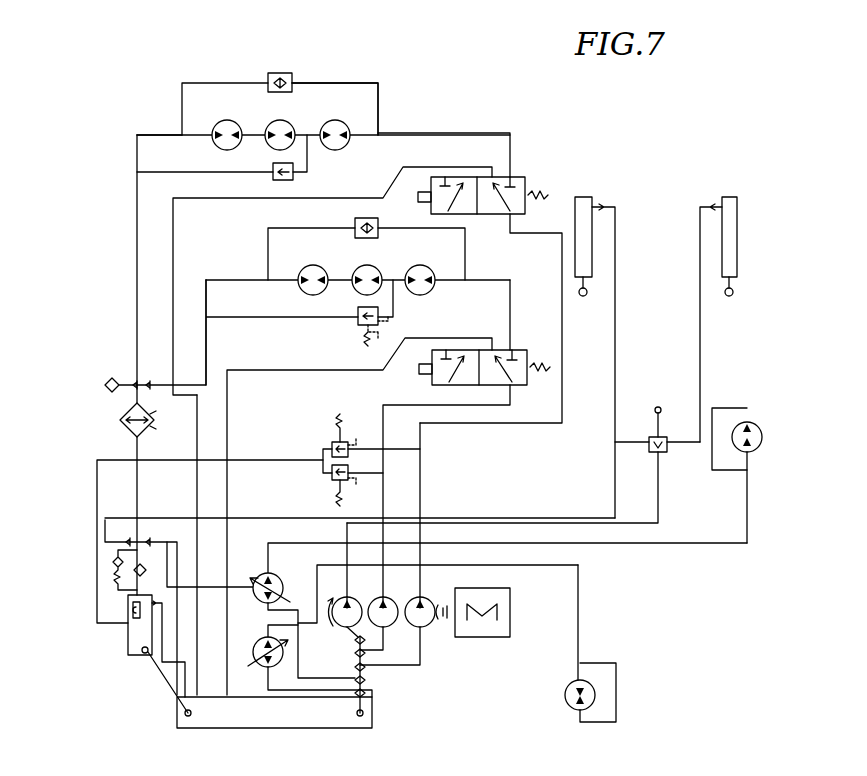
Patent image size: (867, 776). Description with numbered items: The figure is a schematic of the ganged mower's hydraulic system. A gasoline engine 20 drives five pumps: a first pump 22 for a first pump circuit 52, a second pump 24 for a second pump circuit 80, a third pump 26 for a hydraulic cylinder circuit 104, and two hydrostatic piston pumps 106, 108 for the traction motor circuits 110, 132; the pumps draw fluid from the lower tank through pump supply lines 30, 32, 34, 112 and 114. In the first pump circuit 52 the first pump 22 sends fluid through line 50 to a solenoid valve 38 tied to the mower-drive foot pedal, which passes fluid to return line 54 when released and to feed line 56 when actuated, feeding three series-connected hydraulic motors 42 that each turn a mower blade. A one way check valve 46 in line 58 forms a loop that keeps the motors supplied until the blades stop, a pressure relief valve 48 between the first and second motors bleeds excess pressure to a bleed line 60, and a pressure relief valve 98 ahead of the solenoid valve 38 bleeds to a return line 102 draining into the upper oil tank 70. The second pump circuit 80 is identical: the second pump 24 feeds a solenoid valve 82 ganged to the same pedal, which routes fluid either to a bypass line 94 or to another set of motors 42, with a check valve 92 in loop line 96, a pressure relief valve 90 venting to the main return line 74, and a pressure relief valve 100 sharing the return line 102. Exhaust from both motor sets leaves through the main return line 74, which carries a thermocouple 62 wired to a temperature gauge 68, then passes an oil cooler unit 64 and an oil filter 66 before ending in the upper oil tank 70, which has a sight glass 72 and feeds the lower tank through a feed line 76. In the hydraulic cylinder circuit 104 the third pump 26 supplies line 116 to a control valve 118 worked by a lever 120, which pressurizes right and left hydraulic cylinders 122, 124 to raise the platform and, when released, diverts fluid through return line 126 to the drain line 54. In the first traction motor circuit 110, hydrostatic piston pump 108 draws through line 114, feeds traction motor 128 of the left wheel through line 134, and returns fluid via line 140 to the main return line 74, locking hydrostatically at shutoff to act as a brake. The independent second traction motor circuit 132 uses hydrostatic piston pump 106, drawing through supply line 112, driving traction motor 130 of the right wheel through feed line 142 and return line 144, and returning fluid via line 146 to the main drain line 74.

The gasoline engine 20 is at (510, 612).
The first pump 22 is at (425, 630).
The second pump 24 is at (395, 597).
The third pump 26 is at (365, 588).
The pump supply line 30 is at (423, 660).
The pump supply line 32 is at (405, 638).
The pump supply line 34 is at (347, 628).
The solenoid valve 38 is at (527, 177).
The hydraulic motors 42 is at (222, 121).
The one way check valve 46 is at (280, 73).
The pressure relief valve 48 is at (293, 178).
The line 50 is at (423, 478).
The first pump circuit 52 is at (399, 82).
The return line 54 is at (193, 198).
The feed line 56 is at (470, 133).
The loop line 58 is at (372, 83).
The bleed line 60 is at (232, 172).
The thermocouple 62 is at (112, 378).
The oil cooler unit 64 is at (121, 420).
The oil filter 66 is at (113, 565).
The temperature gauge 68 is at (135, 583).
The upper oil tank 70 is at (128, 620).
The sight glass 72 is at (128, 610).
The main fluid return line 74 is at (160, 133).
The feed line 76 is at (162, 670).
The second pump circuit 80 is at (408, 283).
The solenoid valve 82 is at (522, 350).
The pressure relief valve 90 is at (360, 327).
The one way check valve 92 is at (376, 238).
The fluid bypass line 94 is at (233, 410).
The loop line 96 is at (268, 262).
The pressure relief valve 98 is at (341, 412).
The pressure relief valve 100 is at (328, 478).
The return line 102 is at (298, 460).
The hydraulic cylinder circuit 104 is at (688, 152).
The hydrostatic piston pump 106 is at (290, 570).
The hydrostatic piston pump 108 is at (263, 668).
The first traction motor circuit 110 is at (603, 620).
The supply line 112 is at (307, 678).
The supply line 114 is at (330, 700).
The line 116 is at (660, 502).
The control valve 118 is at (662, 455).
The lever 120 is at (658, 406).
The right hydraulic cylinder 122 is at (731, 197).
The left hydraulic cylinder 124 is at (585, 197).
The return line 126 is at (615, 482).
The traction motor 128 is at (617, 690).
The traction motor 130 is at (740, 408).
The second traction motor circuit 132 is at (778, 462).
The feed line 134 is at (578, 652).
The return line 140 is at (187, 697).
The feed line 142 is at (748, 515).
The return line 144 is at (700, 544).
The return line 146 is at (128, 650).